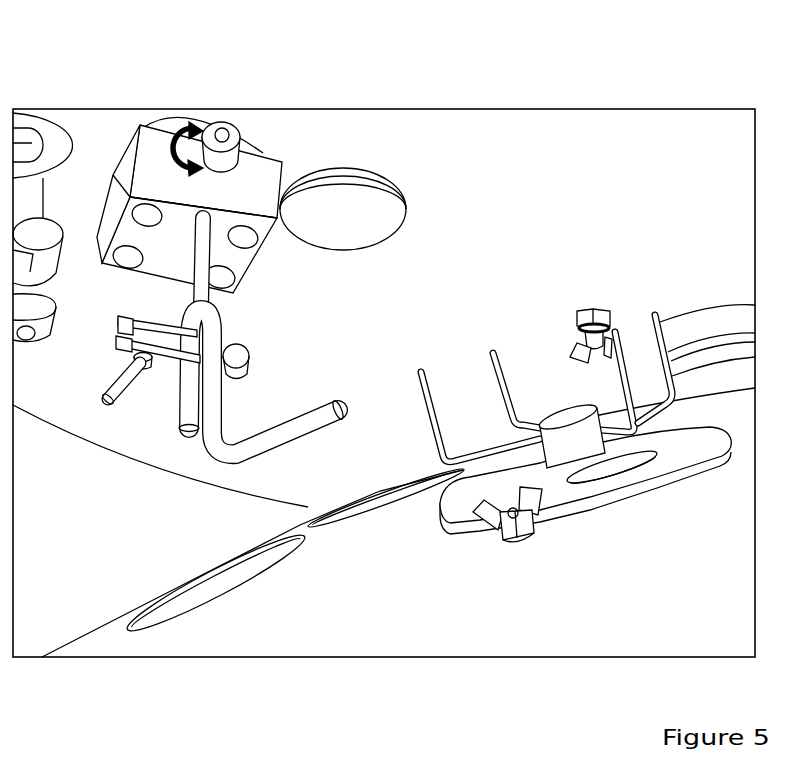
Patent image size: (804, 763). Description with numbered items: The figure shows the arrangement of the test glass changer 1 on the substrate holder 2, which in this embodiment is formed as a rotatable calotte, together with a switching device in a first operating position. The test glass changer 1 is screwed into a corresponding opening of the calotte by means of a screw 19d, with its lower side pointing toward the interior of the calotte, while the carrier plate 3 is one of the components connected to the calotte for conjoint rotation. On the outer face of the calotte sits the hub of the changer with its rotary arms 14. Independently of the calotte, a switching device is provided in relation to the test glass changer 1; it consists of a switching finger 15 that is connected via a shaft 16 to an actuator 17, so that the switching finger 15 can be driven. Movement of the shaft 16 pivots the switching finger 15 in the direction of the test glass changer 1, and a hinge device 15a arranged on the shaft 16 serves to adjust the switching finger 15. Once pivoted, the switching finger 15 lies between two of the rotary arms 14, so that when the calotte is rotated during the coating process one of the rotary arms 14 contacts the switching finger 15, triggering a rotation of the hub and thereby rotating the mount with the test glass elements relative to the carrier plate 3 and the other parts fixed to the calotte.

The test glass changer 1 is at (633, 538).
The substrate holder 2 is at (576, 594).
The carrier plate 3 is at (686, 453).
The rotary arms 14 is at (505, 355).
The switching finger 15 is at (320, 414).
The hinge device 15a is at (158, 389).
The shaft 16 is at (240, 128).
The actuator 17 is at (199, 130).
The screw 19d is at (512, 542).